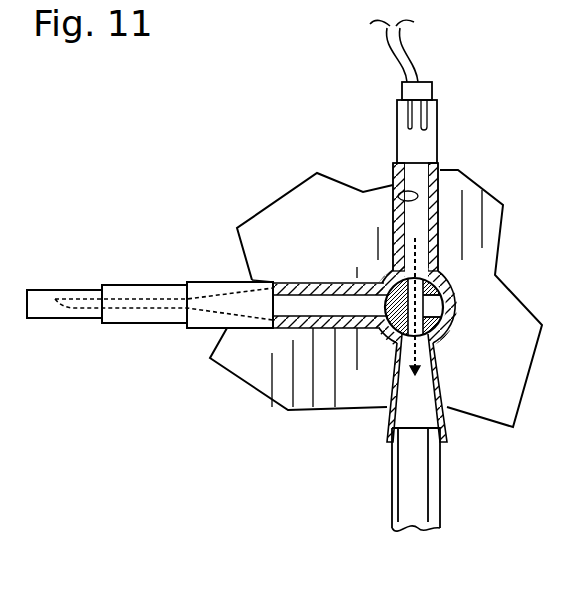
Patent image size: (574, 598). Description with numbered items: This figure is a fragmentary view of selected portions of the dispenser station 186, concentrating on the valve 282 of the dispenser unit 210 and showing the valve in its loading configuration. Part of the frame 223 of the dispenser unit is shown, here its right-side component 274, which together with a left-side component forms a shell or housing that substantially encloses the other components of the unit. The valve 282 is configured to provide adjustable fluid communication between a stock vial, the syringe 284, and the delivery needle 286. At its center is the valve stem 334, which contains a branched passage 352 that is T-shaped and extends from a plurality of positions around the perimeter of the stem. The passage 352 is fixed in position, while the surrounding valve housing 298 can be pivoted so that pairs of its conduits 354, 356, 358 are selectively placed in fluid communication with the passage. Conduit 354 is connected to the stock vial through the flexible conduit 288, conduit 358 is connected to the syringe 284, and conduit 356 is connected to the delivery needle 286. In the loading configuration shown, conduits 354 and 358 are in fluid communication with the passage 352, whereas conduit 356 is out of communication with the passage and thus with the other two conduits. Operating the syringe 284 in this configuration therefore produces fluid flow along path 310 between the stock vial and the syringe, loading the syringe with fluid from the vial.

The dispenser station 186 is at (205, 98).
The dispenser unit 210 is at (243, 153).
The frame 223 is at (287, 178).
The right-side component 274 is at (317, 197).
The valve 282 is at (478, 265).
The syringe 284 is at (380, 486).
The delivery needle 286 is at (143, 308).
The flexible conduit 288 is at (421, 62).
The valve housing 298 is at (461, 312).
The fluid flow path 310 is at (403, 262).
The valve stem 334 is at (430, 322).
The branched passage 352 is at (437, 302).
The conduit 354 is at (398, 203).
The conduit 356 is at (317, 303).
The conduit 358 is at (403, 384).